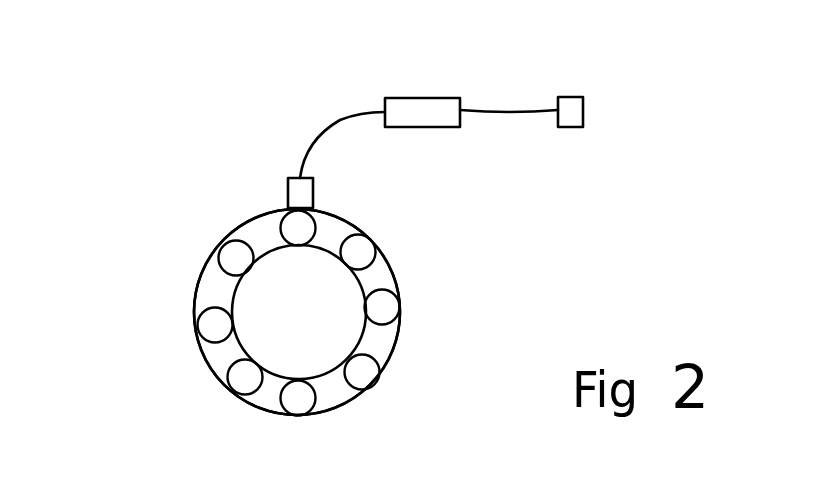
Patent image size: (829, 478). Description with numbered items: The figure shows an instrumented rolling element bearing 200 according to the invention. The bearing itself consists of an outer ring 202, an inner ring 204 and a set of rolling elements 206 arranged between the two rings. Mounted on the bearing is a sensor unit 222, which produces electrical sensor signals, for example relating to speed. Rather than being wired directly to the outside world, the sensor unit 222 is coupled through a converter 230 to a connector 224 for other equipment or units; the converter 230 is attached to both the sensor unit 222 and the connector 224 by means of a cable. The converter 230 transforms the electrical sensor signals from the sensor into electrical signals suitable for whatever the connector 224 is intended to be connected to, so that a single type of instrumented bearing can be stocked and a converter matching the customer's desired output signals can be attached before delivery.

The instrumented rolling element bearing 200 is at (157, 288).
The outer ring 202 is at (398, 352).
The inner ring 204 is at (352, 281).
The rolling elements 206 is at (393, 308).
The sensor unit 222 is at (287, 185).
The converter 230 is at (420, 98).
The connector 224 is at (575, 92).